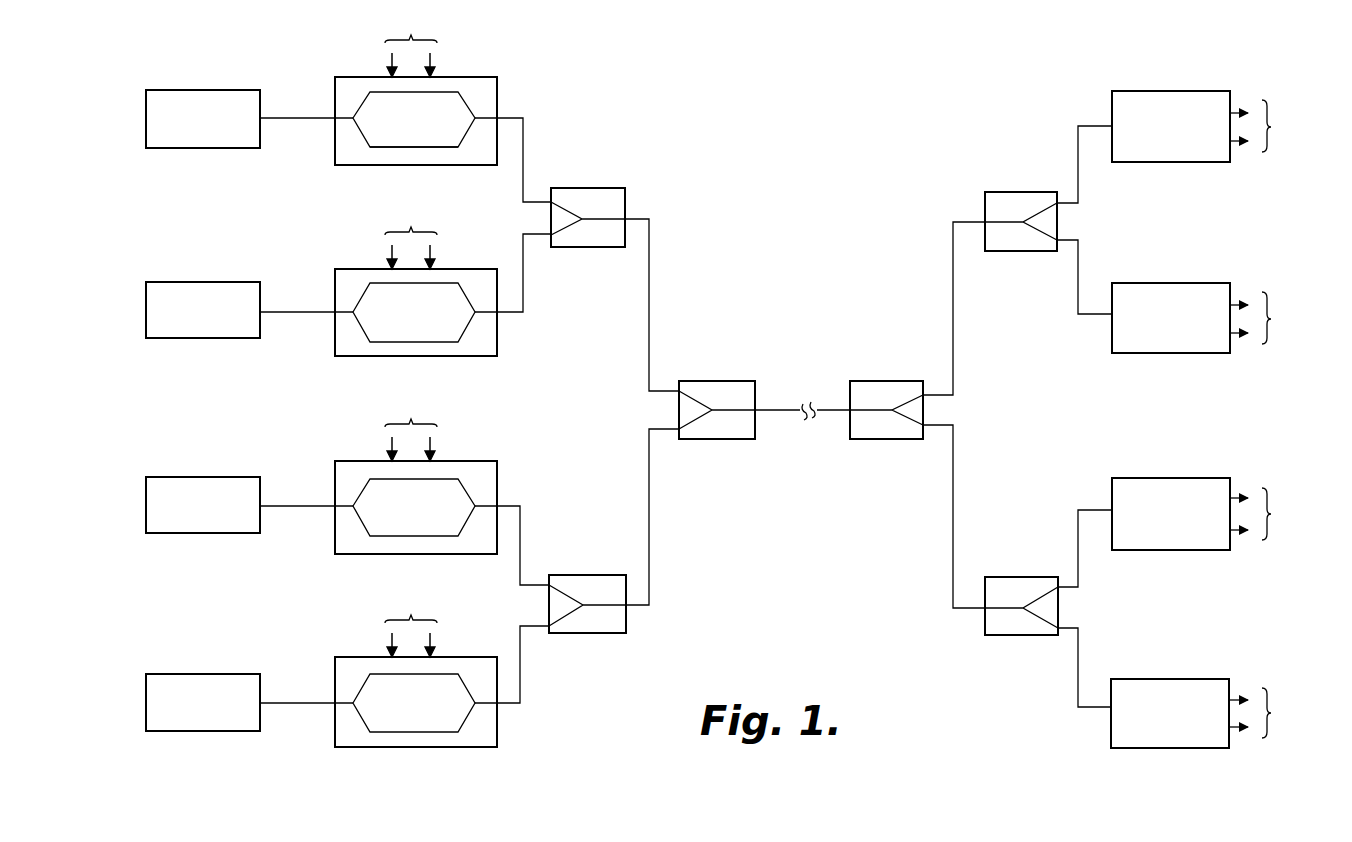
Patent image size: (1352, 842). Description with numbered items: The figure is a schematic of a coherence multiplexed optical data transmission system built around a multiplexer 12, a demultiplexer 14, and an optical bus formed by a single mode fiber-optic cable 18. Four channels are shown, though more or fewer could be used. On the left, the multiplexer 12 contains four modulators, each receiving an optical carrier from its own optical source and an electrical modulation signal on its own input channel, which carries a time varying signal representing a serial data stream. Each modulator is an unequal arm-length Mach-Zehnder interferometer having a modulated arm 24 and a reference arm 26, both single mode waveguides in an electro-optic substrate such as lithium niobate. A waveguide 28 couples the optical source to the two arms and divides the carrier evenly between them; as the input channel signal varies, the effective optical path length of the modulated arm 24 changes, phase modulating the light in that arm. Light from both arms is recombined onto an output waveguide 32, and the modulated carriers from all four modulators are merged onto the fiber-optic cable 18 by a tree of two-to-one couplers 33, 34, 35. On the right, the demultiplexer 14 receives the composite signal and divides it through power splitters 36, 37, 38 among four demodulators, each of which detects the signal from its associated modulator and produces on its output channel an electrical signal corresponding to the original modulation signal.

The multiplexer 12 is at (612, 119).
The demultiplexer 14 is at (913, 172).
The single mode fiber-optic cable 18 is at (772, 408).
The modulated arm 24 is at (394, 96).
The reference arm 26 is at (401, 147).
The waveguide 28 is at (301, 117).
The output waveguide 32 is at (516, 116).
The 2:1 coupler 33 is at (585, 188).
The 2:1 coupler 34 is at (567, 575).
The 2:1 coupler 35 is at (695, 381).
The power splitter 36 is at (888, 381).
The power splitter 37 is at (1018, 192).
The power splitter 38 is at (1020, 577).